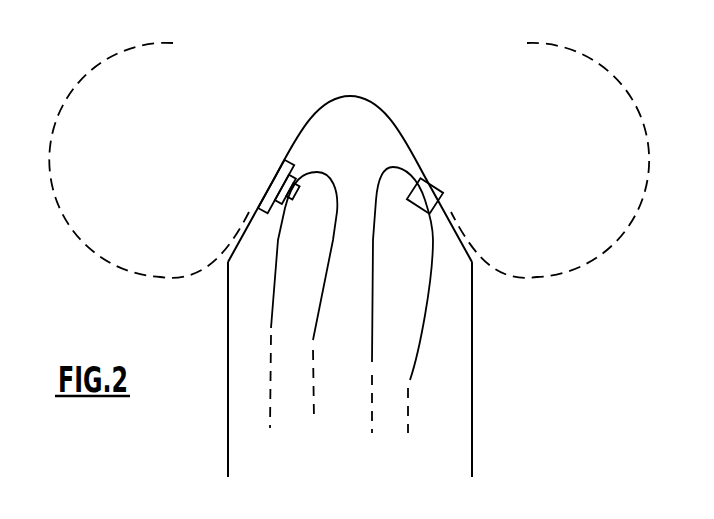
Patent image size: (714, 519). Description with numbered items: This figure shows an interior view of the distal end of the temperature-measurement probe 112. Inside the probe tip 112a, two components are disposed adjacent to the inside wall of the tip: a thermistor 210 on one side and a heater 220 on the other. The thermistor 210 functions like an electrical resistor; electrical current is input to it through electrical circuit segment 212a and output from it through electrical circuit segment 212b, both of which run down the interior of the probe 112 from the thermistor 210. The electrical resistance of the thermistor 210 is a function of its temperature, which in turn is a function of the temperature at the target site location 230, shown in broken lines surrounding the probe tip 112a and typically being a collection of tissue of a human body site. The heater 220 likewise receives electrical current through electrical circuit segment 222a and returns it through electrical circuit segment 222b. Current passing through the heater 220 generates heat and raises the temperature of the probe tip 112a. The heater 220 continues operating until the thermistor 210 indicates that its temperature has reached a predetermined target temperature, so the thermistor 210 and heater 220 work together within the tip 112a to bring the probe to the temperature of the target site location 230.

The temperature-measurement probe 112 is at (452, 453).
The probe tip 112a is at (395, 121).
The thermistor 210 is at (296, 186).
The electrical circuit segment 212a is at (271, 328).
The electrical circuit segment 212b is at (313, 340).
The heater 220 is at (428, 202).
The electrical circuit segment 222a is at (423, 320).
The electrical circuit segment 222b is at (372, 362).
The target site location 230 is at (188, 147).